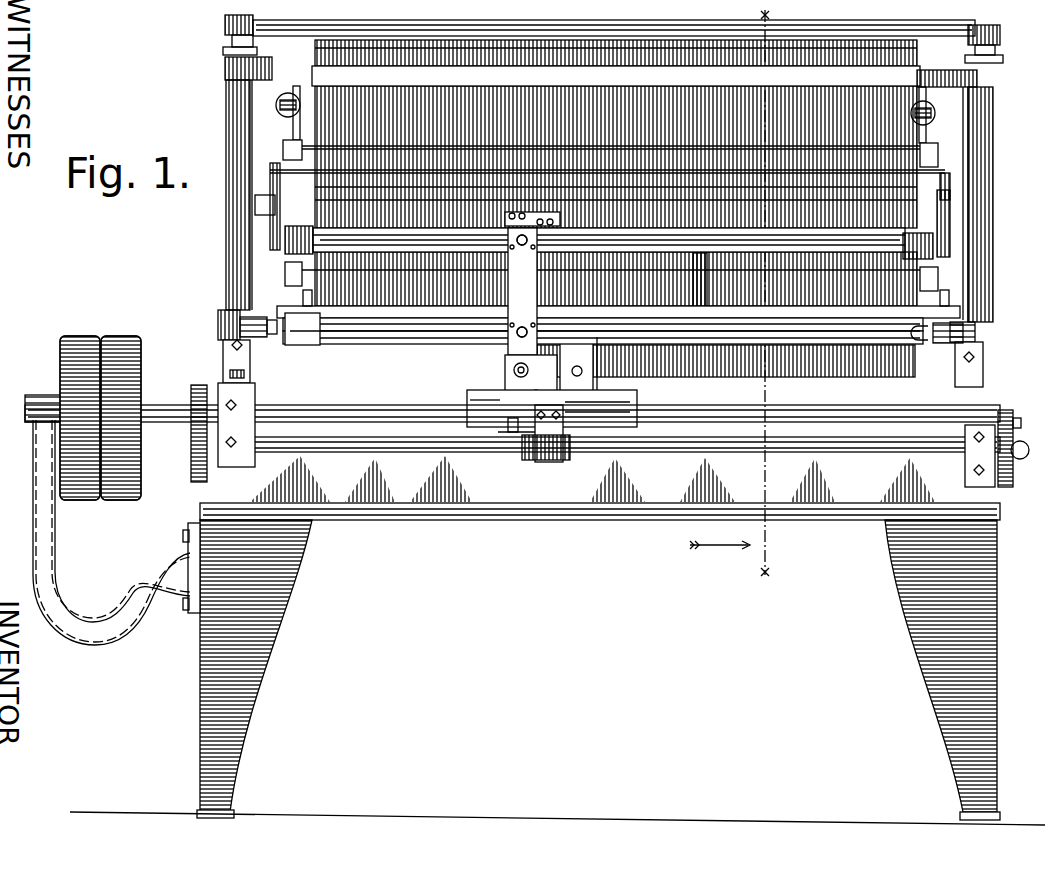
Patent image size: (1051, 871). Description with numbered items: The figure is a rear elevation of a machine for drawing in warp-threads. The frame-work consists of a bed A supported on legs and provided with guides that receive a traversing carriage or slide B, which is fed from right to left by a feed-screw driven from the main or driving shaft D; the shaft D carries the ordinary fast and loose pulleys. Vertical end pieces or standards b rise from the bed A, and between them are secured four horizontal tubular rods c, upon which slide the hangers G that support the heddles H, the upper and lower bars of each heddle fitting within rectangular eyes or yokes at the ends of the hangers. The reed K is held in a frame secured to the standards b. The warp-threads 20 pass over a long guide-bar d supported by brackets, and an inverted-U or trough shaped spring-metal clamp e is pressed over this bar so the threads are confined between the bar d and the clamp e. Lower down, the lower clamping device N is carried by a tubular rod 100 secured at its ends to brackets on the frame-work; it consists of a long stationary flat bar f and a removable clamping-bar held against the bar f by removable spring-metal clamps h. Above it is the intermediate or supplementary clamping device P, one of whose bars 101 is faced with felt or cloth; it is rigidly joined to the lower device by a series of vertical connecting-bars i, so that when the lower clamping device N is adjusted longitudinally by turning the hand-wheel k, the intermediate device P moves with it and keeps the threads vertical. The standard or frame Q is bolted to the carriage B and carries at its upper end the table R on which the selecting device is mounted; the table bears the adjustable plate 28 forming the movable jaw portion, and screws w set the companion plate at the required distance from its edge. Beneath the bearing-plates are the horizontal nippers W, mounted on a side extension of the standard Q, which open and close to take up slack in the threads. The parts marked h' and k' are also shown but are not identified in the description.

The spring-metal clamp e is at (315, 42).
The guide-bar d is at (320, 73).
The heddle H is at (283, 148).
The hanger G is at (283, 116).
The reed K is at (870, 188).
The intermediate clamping device P is at (338, 238).
The bar of intermediate clamping device 101 is at (610, 241).
The adjustable plate 28 is at (549, 224).
The screw w is at (565, 226).
The screw h' is at (520, 250).
The standard Q is at (531, 316).
The screw k' is at (520, 324).
The standard b is at (228, 266).
The tubular rod c is at (274, 318).
The hand-wheel k is at (585, 348).
The vertical connecting-bar i is at (335, 303).
The tubular rod 100 is at (279, 322).
The spring-metal clamp h is at (605, 365).
The lower clamping device N is at (398, 336).
The table R is at (480, 255).
The flat bar f is at (512, 222).
The traversing carriage B is at (488, 392).
The nippers W is at (572, 268).
The warp-thread 20 is at (668, 335).
The main or driving shaft D is at (160, 414).
The bed A is at (535, 604).